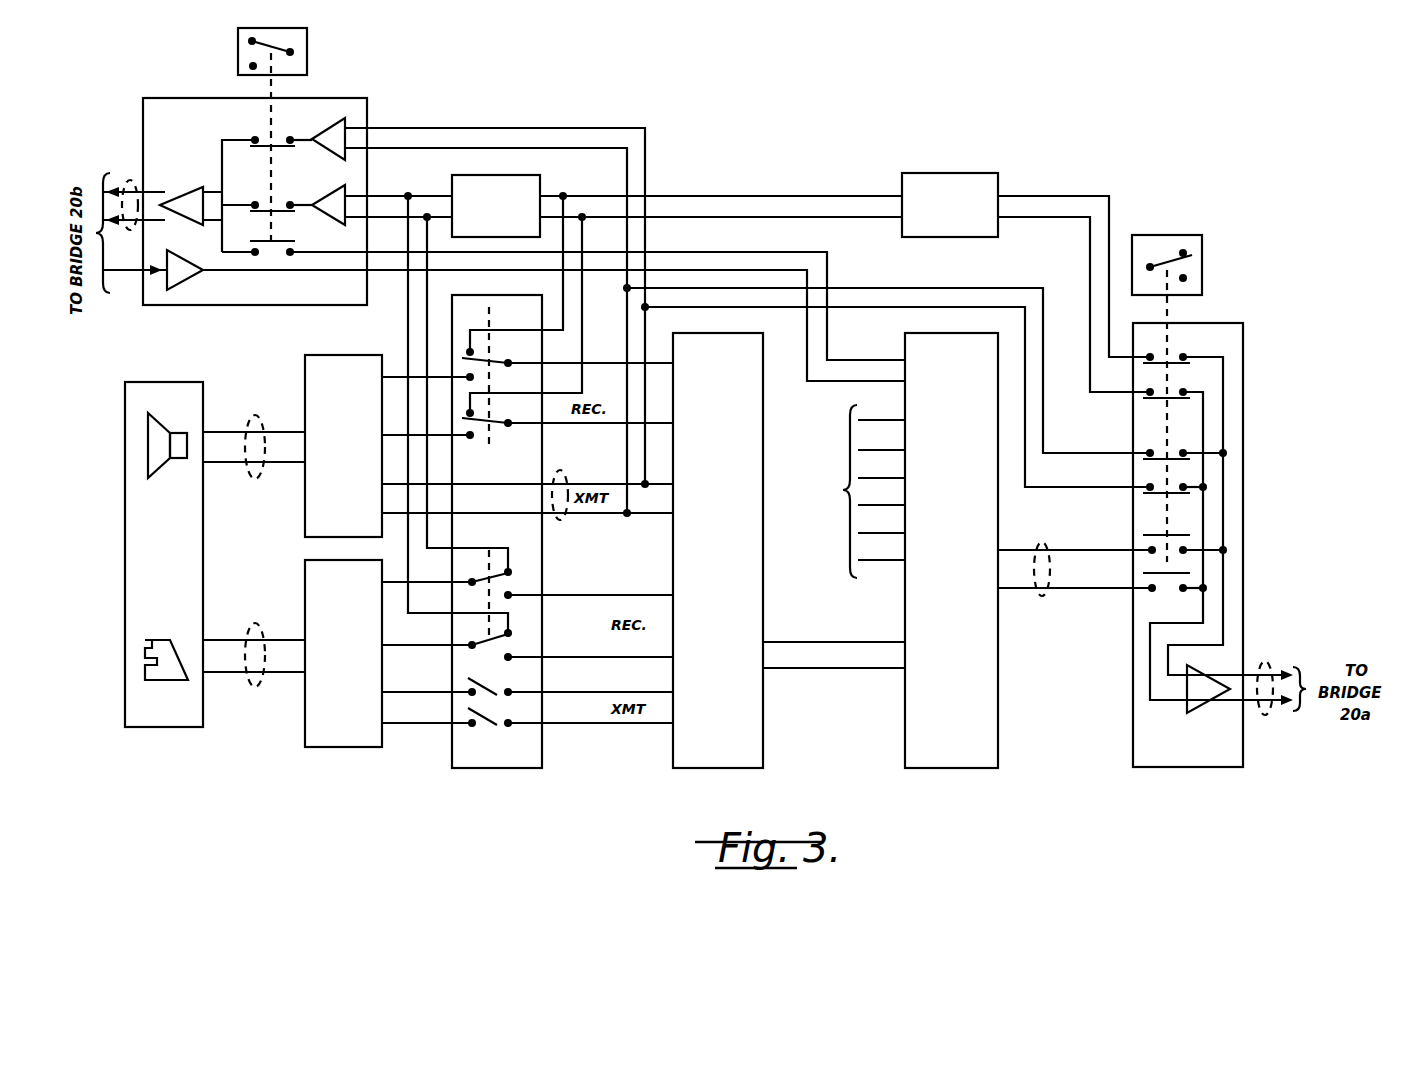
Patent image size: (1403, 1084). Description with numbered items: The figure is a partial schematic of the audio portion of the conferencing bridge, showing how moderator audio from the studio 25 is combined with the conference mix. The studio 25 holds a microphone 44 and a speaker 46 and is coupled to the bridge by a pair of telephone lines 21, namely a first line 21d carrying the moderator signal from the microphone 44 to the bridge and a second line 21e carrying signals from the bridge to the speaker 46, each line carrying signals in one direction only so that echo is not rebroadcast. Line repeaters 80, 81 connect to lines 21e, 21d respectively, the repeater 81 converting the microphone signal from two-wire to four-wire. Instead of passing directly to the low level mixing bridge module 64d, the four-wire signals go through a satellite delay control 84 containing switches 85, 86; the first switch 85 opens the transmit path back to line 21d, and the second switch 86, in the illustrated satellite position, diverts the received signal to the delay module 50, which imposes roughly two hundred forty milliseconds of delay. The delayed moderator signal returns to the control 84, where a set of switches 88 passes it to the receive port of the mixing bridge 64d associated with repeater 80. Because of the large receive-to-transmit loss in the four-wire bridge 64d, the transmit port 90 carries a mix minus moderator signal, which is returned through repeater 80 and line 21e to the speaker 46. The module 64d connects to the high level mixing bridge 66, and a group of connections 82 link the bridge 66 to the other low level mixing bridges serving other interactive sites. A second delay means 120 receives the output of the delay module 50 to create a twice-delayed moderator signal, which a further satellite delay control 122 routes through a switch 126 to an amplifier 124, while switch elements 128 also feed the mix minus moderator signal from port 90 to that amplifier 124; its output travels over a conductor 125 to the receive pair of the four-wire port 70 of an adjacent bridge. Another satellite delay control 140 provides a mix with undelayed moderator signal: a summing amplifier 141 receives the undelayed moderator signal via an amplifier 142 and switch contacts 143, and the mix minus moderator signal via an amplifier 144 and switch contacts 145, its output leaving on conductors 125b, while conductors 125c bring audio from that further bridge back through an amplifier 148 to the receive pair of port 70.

The telephone lines 21 is at (270, 615).
The first telephone line 21d is at (255, 687).
The second telephone line 21e is at (255, 418).
The studio 25 is at (143, 388).
The microphone 44 is at (145, 642).
The speaker 46 is at (140, 460).
The delay module 50 is at (533, 176).
The low level mixing bridge module 64d is at (765, 748).
The high level mixing bridge 66 is at (1000, 745).
The four-wire port 70 is at (1052, 606).
The line repeater 80 is at (307, 355).
The line repeater 81 is at (337, 748).
The connections 82 is at (850, 491).
The satellite delay control 84 is at (500, 768).
The first switch 85 is at (493, 725).
The second switch 86 is at (512, 630).
The set of switches 88 is at (463, 425).
The port 90 is at (562, 522).
The second delay means 120 is at (944, 173).
The satellite delay control 122 is at (1245, 335).
The amplifier 124 is at (1205, 672).
The conductor 125 is at (1265, 717).
The conductors 125b is at (128, 183).
The conductors 125c is at (113, 290).
The switch 126 is at (1192, 388).
The switch elements 128 is at (1192, 482).
The satellite delay control 140 is at (343, 98).
The summing amplifier 141 is at (193, 180).
The amplifier 142 is at (337, 126).
The switch contacts 143 is at (255, 134).
The amplifier 144 is at (335, 192).
The switch contacts 145 is at (265, 196).
The amplifier 148 is at (178, 278).